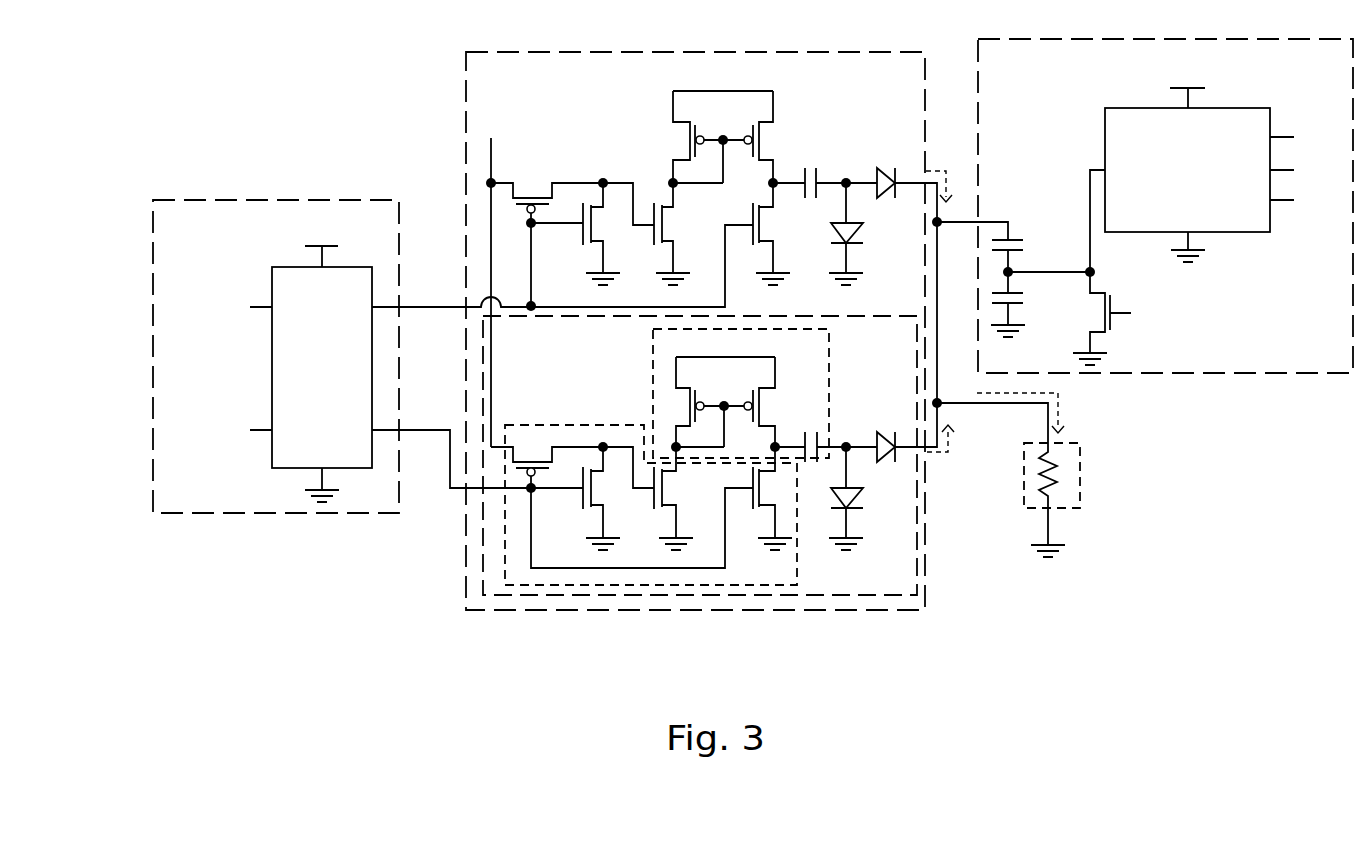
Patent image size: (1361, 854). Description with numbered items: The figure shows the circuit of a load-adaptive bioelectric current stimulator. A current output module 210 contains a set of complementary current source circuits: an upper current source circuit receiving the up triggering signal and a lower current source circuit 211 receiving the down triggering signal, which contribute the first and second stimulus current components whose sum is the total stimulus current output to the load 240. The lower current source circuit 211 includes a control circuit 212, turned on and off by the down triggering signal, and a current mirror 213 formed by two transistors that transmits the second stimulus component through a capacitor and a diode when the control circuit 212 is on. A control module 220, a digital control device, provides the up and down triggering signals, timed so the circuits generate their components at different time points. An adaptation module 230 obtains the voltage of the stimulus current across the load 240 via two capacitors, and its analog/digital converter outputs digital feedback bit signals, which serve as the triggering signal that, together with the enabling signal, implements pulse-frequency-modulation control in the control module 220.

The current output module 210 is at (927, 555).
The lower current source circuit 211 is at (482, 538).
The control circuit 212 is at (645, 583).
The current mirror 213 is at (829, 390).
The control module 220 is at (288, 513).
The adaptation module 230 is at (1150, 373).
The load 240 is at (1080, 475).